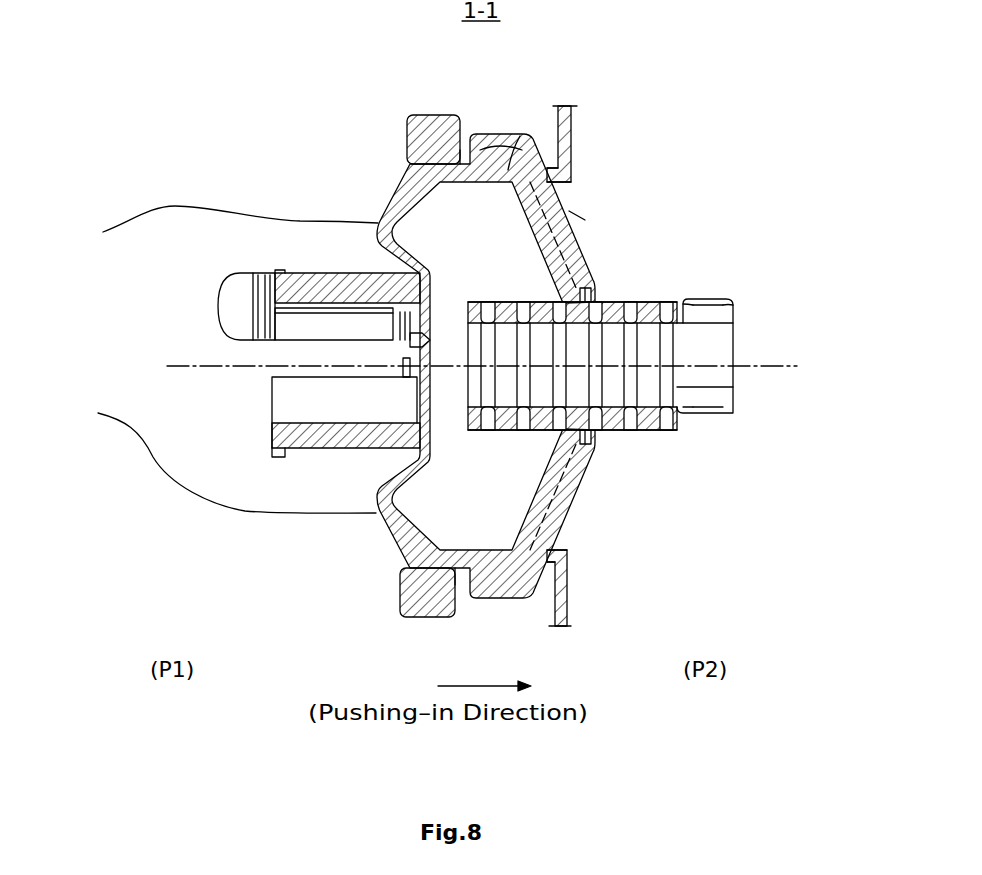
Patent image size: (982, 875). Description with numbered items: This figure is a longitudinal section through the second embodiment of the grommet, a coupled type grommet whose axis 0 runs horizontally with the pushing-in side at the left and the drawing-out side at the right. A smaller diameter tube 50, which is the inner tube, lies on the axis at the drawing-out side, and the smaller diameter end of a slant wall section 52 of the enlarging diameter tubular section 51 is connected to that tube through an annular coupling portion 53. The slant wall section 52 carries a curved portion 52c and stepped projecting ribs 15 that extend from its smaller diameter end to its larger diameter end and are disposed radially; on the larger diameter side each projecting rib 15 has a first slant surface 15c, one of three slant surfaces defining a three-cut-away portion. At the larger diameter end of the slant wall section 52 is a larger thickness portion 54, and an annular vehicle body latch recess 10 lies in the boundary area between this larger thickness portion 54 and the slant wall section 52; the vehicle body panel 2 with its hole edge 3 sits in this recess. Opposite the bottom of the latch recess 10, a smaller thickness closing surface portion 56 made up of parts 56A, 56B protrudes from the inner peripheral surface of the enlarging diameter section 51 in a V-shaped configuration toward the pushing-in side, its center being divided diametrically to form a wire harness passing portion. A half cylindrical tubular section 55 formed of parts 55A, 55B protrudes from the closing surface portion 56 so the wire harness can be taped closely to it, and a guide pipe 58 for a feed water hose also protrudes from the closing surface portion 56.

The axis line 0 is at (757, 367).
The panel 2 is at (573, 132).
The mounting hole edge 3 is at (573, 182).
The vehicle body latch recess 10 is at (463, 136).
The projecting rib 15 is at (582, 244).
The first slant surface 15c is at (494, 132).
The smaller diameter tube 50 is at (622, 431).
The enlarging diameter tubular section 51 is at (574, 209).
The slant wall section 52 is at (548, 512).
The curved portion 52c is at (520, 132).
The annular coupling portion 53 is at (593, 436).
The larger thickness portion 54 is at (407, 127).
The half cylindrical tubular section 55 is at (277, 356).
The half cylindrical tubular section part 55A is at (317, 300).
The half cylindrical tubular section part 55B is at (273, 405).
The closing surface portion 56 is at (202, 359).
The closing surface portion part 56A is at (223, 229).
The closing surface portion part 56B is at (219, 457).
The guide pipe 58 is at (343, 273).